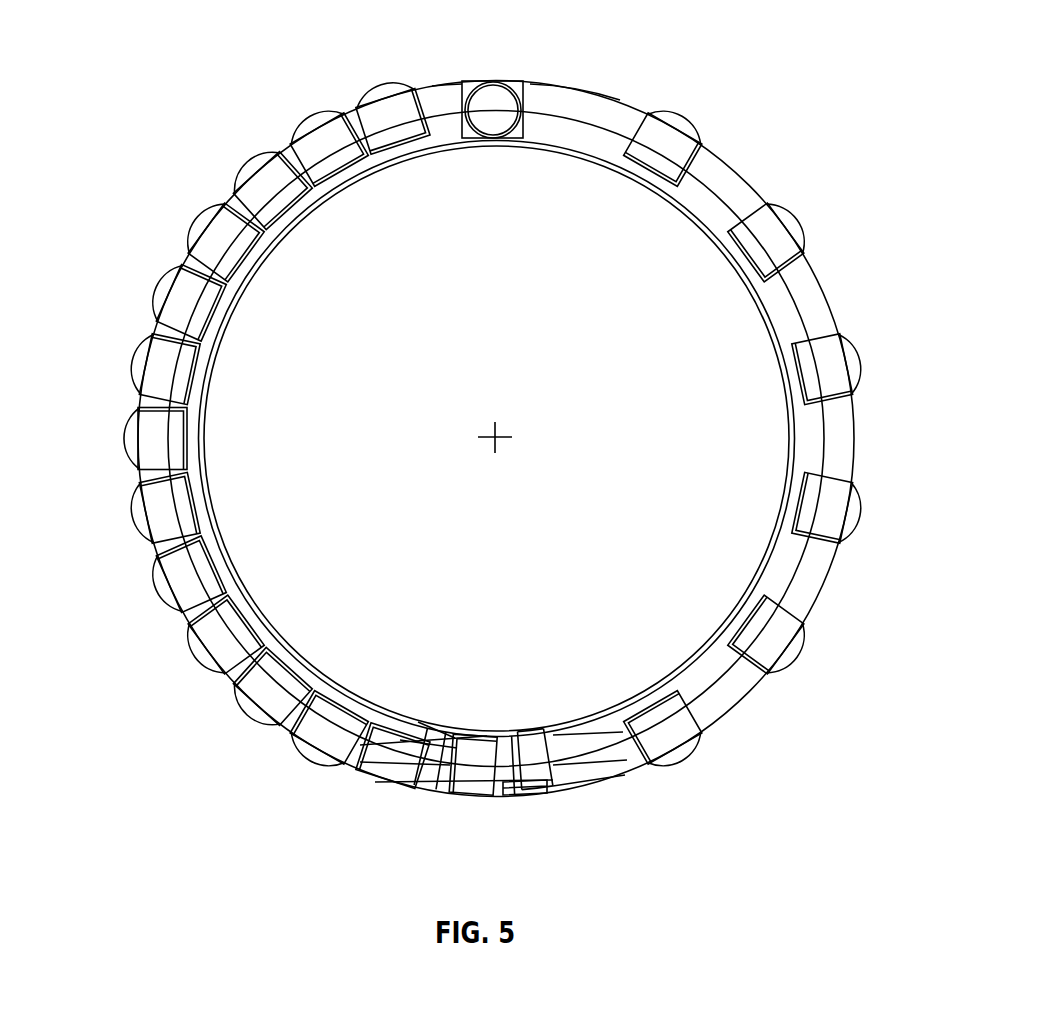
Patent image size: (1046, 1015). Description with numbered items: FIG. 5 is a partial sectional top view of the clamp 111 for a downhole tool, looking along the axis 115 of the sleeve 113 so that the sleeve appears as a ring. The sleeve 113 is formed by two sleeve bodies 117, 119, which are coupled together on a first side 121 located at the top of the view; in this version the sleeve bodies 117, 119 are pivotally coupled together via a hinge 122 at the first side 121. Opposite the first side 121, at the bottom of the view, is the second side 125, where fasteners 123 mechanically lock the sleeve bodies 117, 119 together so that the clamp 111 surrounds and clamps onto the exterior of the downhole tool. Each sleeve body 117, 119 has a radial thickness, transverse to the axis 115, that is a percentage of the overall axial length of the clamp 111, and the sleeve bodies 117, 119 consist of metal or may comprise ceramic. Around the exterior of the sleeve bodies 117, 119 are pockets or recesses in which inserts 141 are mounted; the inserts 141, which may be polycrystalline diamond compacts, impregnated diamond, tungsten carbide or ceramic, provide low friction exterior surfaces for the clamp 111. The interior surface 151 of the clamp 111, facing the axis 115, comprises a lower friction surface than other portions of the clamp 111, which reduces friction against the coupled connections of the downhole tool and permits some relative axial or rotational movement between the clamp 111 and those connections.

The clamp 111 is at (774, 58).
The sleeve 113 is at (877, 432).
The axis 115 is at (497, 433).
The sleeve body 117 is at (440, 97).
The sleeve body 119 is at (593, 107).
The first side 121 is at (493, 90).
The hinge 122 is at (508, 93).
The fasteners 123 is at (398, 735).
The second side 125 is at (545, 738).
The inserts 141 is at (127, 438).
The interior surface 151 is at (318, 208).